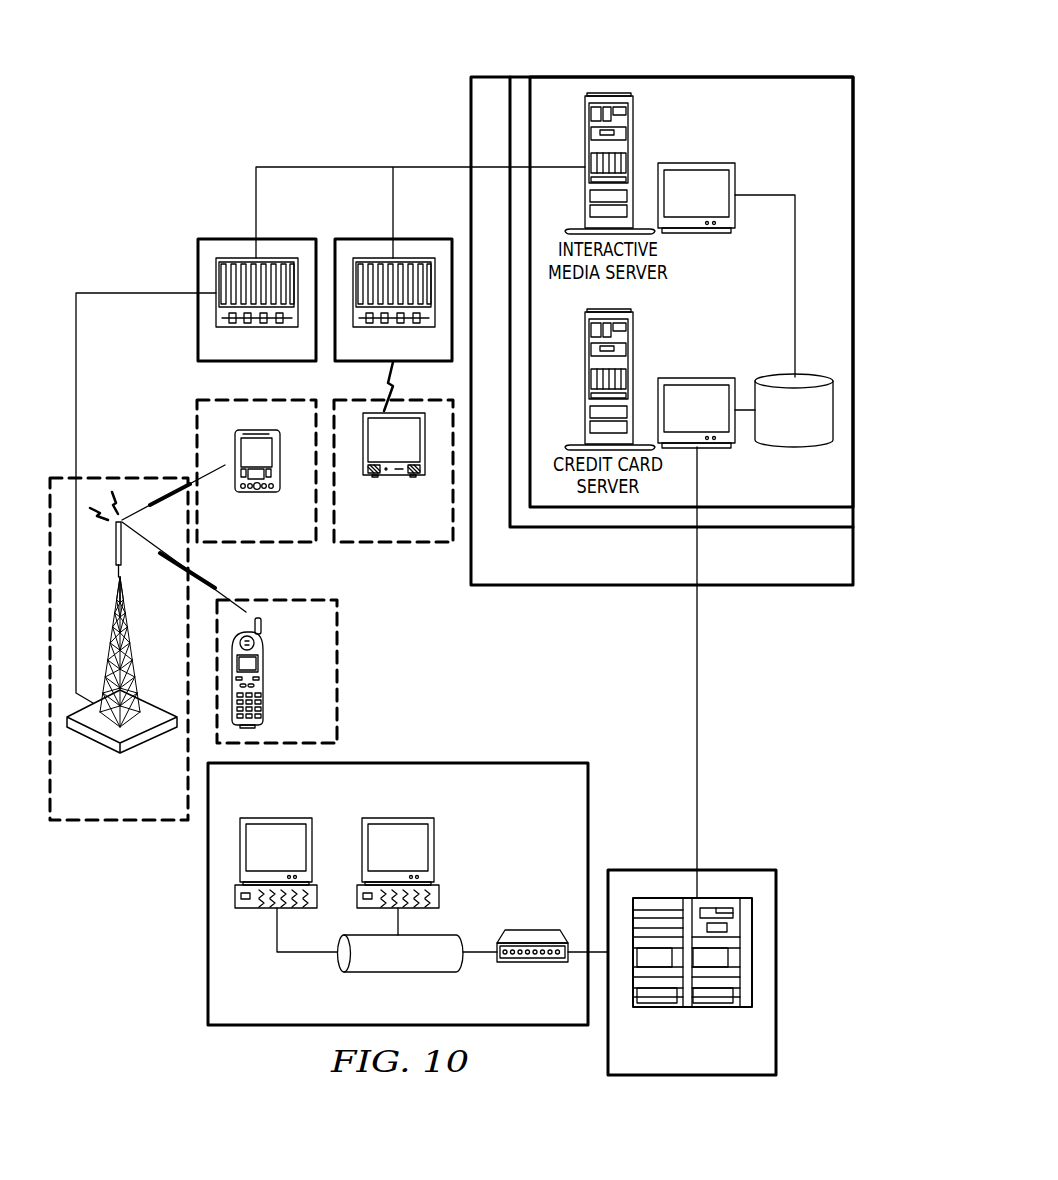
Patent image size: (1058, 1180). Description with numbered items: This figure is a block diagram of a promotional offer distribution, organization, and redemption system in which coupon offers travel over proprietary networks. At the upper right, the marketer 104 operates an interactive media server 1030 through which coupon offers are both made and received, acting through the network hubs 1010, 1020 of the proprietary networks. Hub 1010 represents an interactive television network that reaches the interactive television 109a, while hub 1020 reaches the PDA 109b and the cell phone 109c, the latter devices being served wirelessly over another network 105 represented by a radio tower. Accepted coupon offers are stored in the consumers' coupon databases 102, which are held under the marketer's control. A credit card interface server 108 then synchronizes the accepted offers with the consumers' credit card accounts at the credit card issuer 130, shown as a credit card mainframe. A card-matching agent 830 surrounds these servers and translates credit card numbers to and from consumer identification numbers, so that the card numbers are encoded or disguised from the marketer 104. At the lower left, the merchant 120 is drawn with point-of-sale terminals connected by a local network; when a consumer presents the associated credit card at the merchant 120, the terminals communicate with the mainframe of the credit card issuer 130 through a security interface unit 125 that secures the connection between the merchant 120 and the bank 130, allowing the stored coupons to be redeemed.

The marketer 104 is at (712, 78).
The interactive media server 1030 is at (697, 163).
The credit card interface server 108 is at (698, 378).
The coupon database 102 is at (814, 378).
The network hub 1020 is at (228, 238).
The network hub 1010 is at (364, 238).
The network 105 is at (400, 370).
The PDA 109b is at (197, 444).
The interactive television 109a is at (393, 543).
The cell phone 109c is at (337, 682).
The card-matching agent 830 is at (778, 569).
The merchant 120 is at (207, 894).
The security interface unit 125 is at (533, 929).
The credit card issuer 130 is at (777, 971).